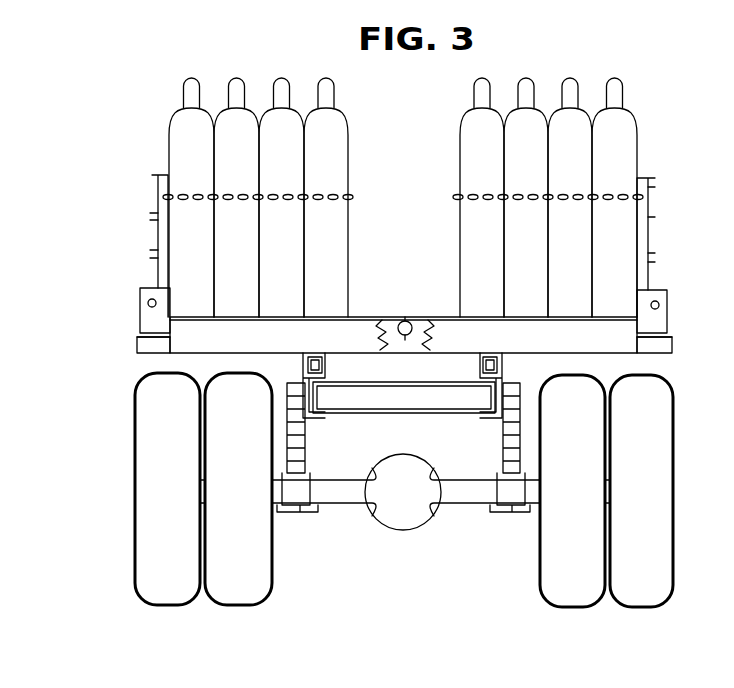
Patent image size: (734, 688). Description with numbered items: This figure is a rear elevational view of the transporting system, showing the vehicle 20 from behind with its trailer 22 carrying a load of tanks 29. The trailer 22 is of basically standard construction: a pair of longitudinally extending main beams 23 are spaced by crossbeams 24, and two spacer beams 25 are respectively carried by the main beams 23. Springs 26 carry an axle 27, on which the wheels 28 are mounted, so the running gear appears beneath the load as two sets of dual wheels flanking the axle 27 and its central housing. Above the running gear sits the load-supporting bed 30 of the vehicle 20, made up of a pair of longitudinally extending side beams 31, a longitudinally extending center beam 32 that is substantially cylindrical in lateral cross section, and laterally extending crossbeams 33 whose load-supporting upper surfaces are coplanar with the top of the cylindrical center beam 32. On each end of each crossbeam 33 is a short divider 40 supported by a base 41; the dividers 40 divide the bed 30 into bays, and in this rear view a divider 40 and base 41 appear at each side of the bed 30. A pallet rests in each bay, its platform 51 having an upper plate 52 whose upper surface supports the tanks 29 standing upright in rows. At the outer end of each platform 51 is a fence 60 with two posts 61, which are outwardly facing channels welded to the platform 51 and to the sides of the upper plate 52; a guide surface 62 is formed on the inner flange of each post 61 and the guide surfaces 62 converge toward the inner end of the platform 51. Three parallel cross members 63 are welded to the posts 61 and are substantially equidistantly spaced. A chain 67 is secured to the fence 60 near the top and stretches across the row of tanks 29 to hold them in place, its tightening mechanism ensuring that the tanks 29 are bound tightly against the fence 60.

The vehicle 20 is at (120, 426).
The trailer 22 is at (163, 363).
The main beams 23 is at (320, 418).
The crossbeams 24 is at (421, 398).
The spacer beams 25 is at (309, 367).
The springs 26 is at (288, 452).
The axle 27 is at (460, 497).
The wheels 28 is at (548, 513).
The tanks 29 is at (345, 183).
The load-supporting bed 30 is at (624, 358).
The side beams 31 is at (138, 345).
The center beam 32 is at (405, 338).
The crossbeams 33 is at (585, 345).
The divider 40 is at (146, 303).
The base 41 is at (145, 334).
The platform 51 is at (389, 316).
The upper plate 52 is at (362, 317).
The fence 60 is at (156, 273).
The posts 61 is at (156, 189).
The guide surface 62 is at (156, 219).
The cross members 63 is at (651, 218).
The chain 67 is at (192, 193).